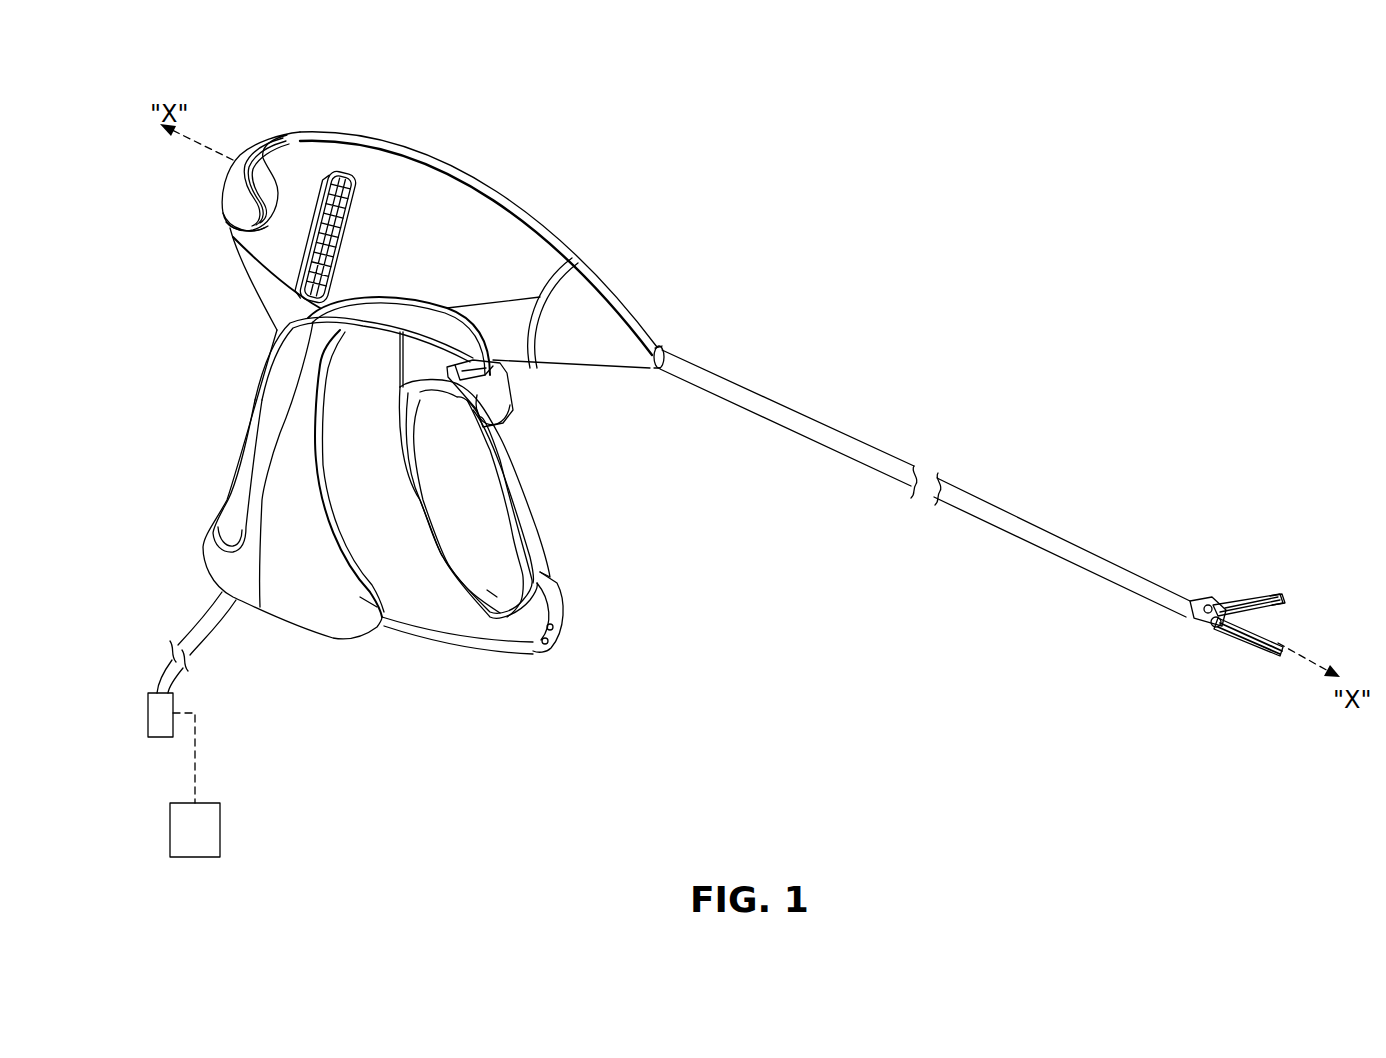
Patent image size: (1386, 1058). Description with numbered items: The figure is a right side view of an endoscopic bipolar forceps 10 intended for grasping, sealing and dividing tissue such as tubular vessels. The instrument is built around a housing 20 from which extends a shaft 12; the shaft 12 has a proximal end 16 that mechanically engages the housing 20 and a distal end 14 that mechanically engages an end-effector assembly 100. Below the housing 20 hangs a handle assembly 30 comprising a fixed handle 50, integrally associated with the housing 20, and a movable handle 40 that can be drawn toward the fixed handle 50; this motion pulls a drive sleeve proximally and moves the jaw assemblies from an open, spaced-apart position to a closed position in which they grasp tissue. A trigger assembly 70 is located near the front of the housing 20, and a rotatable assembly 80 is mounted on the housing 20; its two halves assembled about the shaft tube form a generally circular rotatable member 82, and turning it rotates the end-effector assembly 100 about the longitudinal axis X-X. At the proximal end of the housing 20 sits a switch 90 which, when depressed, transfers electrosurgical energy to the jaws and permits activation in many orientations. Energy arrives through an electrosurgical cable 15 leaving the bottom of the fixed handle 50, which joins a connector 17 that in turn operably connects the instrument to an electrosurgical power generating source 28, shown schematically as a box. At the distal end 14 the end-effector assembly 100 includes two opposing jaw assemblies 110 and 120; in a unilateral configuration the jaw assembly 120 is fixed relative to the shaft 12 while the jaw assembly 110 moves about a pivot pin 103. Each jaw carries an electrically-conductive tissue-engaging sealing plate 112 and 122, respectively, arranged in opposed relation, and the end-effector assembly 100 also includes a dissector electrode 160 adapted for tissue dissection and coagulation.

The endoscopic bipolar forceps 10 is at (865, 243).
The shaft 12 is at (996, 522).
The distal end 14 is at (1182, 606).
The electrosurgical cable 15 is at (205, 622).
The proximal end 16 is at (688, 378).
The connector 17 is at (147, 713).
The housing 20 is at (533, 198).
The electrosurgical power generating source 28 is at (211, 843).
The handle assembly 30 is at (351, 656).
The movable handle 40 is at (523, 478).
The fixed handle 50 is at (248, 443).
The trigger assembly 70 is at (515, 393).
The rotatable assembly 80 is at (322, 179).
The rotatable member 82 is at (352, 190).
The switch 90 is at (230, 190).
The end-effector assembly 100 is at (1285, 578).
The pivot pin 103 is at (1212, 631).
The jaw assembly 110 is at (1258, 595).
The sealing plate 112 is at (1278, 608).
The jaw assembly 120 is at (1260, 650).
The sealing plate 122 is at (1280, 641).
The dissector electrode 160 is at (1280, 598).